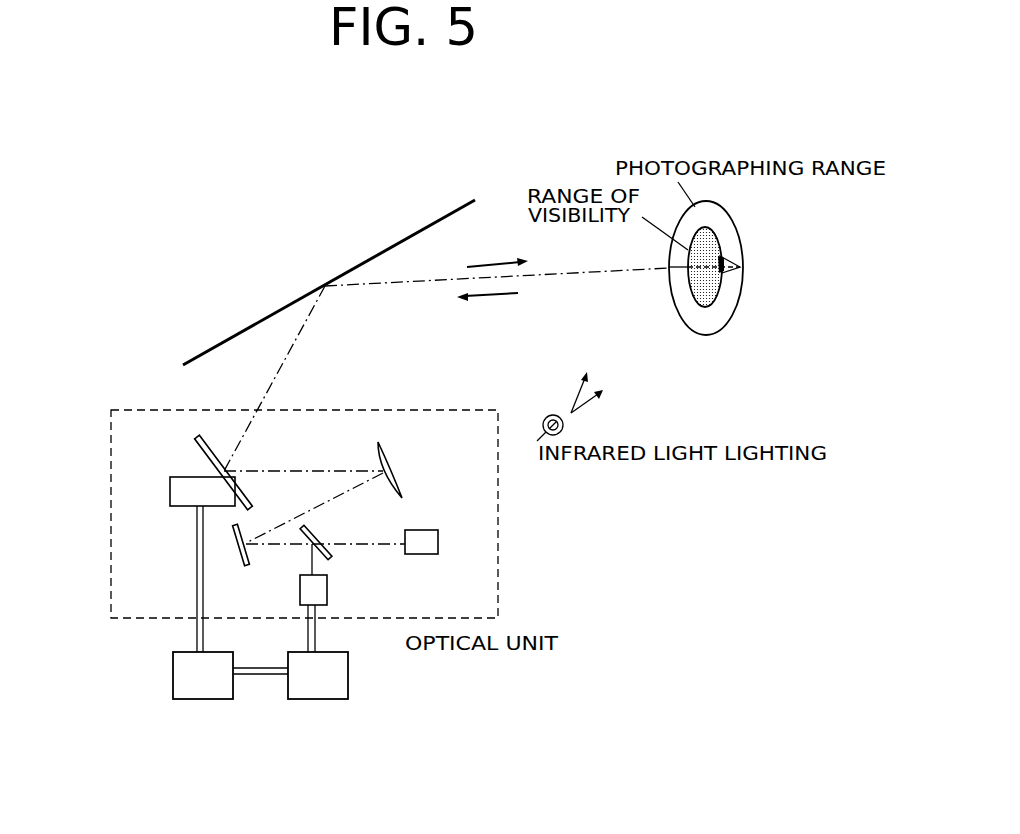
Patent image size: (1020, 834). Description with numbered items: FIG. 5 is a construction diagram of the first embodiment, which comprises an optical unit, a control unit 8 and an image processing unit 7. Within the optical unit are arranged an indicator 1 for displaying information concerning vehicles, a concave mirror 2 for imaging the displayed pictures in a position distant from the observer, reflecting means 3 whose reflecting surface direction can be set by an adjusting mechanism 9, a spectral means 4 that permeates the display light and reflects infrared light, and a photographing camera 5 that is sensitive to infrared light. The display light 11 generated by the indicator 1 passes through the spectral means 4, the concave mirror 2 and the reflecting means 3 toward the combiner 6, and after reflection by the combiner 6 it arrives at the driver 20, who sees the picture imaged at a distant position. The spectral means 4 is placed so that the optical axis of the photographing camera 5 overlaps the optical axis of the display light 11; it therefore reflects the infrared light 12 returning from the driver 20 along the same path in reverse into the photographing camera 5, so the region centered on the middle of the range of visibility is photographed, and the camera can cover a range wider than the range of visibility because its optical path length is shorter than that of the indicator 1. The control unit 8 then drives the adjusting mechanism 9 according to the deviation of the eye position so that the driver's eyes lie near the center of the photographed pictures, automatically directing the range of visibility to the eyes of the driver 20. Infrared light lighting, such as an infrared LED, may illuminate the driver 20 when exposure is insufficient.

The indicator 1 is at (478, 529).
The concave mirror 2 is at (444, 455).
The reflecting means 3 is at (151, 463).
The spectral means 4 is at (434, 551).
The photographing camera 5 is at (476, 598).
The combiner 6 is at (275, 282).
The image processing unit 7 is at (396, 699).
The control unit 8 is at (180, 690).
The adjusting mechanism 9 is at (132, 564).
The display light 11 is at (526, 249).
The infrared light 12 is at (525, 311).
The driver 20 is at (728, 284).